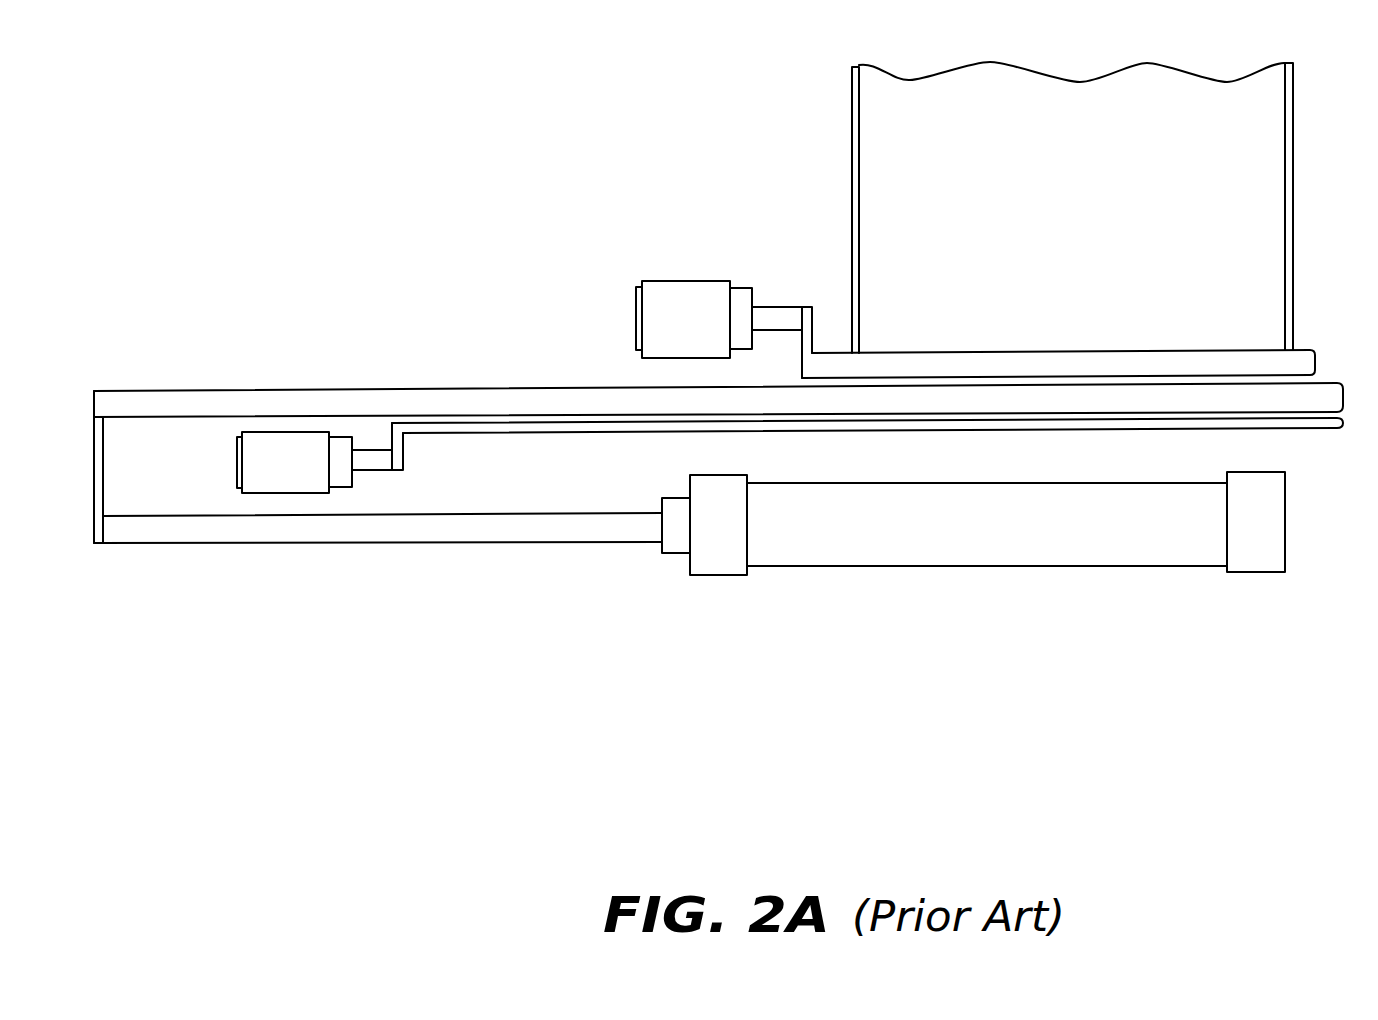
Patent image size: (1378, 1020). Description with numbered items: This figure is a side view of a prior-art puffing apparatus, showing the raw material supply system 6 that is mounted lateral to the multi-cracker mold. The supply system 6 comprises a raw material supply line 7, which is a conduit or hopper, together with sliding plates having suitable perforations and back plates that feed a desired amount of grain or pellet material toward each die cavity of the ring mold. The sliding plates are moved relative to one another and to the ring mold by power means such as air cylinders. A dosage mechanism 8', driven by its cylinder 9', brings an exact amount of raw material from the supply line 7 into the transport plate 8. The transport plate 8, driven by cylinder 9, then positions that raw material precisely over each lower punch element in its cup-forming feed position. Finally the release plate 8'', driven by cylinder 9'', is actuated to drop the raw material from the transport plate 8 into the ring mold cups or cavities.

The raw material supply system 6 is at (533, 86).
The raw material supply line 7 is at (866, 112).
The transport plate 8 is at (718, 413).
The dosage mechanism 8' is at (1070, 311).
The release plate 8'' is at (867, 515).
The cylinder 9 is at (973, 573).
The cylinder 9' is at (685, 329).
The cylinder 9'' is at (319, 517).